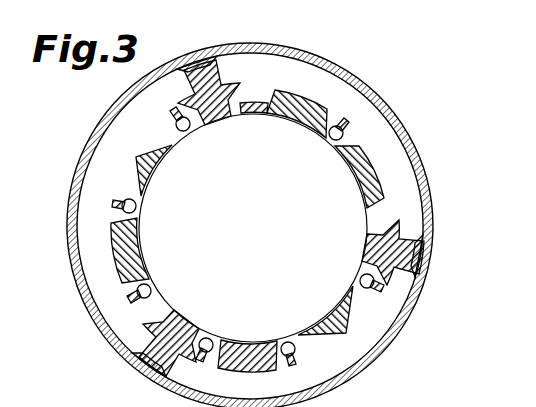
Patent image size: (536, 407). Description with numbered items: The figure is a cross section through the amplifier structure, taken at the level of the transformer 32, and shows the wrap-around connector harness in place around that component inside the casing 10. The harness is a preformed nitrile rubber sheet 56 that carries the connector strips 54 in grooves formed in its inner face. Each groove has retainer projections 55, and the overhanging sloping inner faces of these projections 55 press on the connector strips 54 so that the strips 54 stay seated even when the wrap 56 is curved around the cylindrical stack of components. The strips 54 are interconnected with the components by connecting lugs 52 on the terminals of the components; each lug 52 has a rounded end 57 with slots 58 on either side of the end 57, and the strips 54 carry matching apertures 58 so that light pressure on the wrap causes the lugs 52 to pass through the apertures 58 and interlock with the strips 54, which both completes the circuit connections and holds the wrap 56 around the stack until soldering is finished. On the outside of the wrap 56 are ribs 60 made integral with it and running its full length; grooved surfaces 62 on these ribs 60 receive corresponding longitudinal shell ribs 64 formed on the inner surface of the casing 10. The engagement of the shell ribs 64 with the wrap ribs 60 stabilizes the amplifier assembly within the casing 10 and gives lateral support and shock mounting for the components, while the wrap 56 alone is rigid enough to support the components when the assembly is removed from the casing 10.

The casing 10 is at (415, 150).
The transformer 32 is at (266, 221).
The connecting lugs 52 is at (341, 130).
The connector strips 54 is at (251, 103).
The retainer projections 55 is at (272, 98).
The rubber sheet 56 is at (316, 108).
The rounded ends 57 is at (343, 134).
The apertures 58 is at (178, 138).
The ribs 60 is at (209, 84).
The grooved surfaces 62 is at (425, 247).
The shell ribs 64 is at (202, 58).